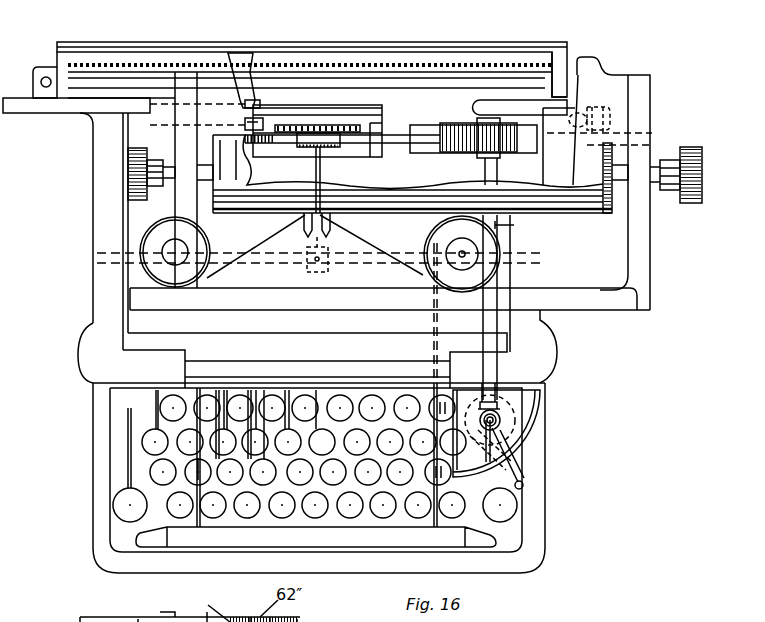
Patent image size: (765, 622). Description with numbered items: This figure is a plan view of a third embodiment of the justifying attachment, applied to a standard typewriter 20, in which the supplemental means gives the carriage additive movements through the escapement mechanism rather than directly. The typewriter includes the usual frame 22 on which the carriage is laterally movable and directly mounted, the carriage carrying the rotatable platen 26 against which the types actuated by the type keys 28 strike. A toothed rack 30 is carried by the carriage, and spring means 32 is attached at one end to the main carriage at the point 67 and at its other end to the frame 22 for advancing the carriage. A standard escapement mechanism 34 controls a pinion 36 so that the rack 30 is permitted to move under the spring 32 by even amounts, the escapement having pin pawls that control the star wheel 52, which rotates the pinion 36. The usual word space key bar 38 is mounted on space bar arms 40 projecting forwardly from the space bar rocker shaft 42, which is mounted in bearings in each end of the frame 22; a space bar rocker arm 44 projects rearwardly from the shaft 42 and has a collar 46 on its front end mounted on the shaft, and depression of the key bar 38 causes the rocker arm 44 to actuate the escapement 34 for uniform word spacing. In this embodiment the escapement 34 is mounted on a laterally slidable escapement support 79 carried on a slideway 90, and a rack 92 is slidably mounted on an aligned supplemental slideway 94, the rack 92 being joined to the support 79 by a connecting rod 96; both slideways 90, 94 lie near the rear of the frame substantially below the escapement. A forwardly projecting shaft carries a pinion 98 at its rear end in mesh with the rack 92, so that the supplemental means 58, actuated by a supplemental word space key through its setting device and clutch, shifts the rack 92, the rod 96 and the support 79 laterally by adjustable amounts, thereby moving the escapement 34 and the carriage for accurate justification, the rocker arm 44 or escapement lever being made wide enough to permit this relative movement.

The typewriter 20 is at (76, 352).
The typewriter frame 22 is at (92, 222).
The platen 26 is at (602, 183).
The type keys 28 is at (322, 442).
The toothed rack 30 is at (245, 130).
The spring means 32 is at (207, 101).
The escapement mechanism 34 is at (323, 127).
The pinion 36 is at (365, 120).
The word space key bar 38 is at (316, 537).
The space bar arms 40 is at (437, 330).
The space bar rocker shaft 42 is at (543, 262).
The space bar rocker arm 44 is at (412, 174).
The collar 46 is at (328, 271).
The star wheel 52 is at (291, 125).
The supplemental means 58 is at (544, 64).
The spring attachment point 67 is at (590, 115).
The escapement support 79 is at (366, 151).
The slideway 90 is at (357, 110).
The rack 92 is at (453, 126).
The supplemental slideway 94 is at (419, 127).
The connecting rod 96 is at (376, 149).
The pinion 98 is at (523, 113).